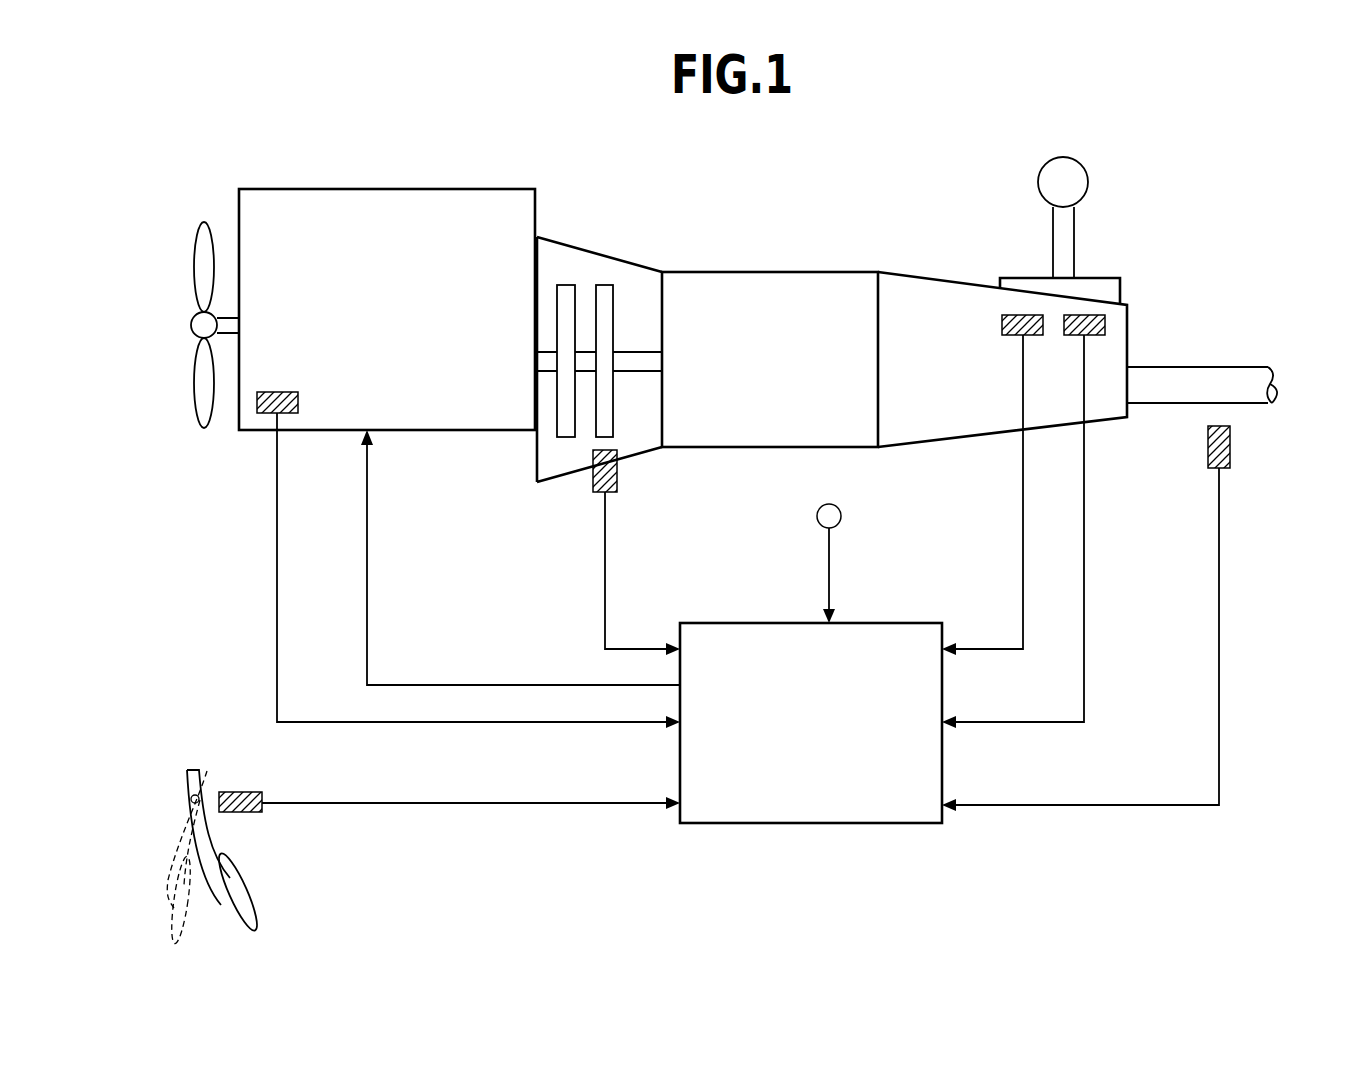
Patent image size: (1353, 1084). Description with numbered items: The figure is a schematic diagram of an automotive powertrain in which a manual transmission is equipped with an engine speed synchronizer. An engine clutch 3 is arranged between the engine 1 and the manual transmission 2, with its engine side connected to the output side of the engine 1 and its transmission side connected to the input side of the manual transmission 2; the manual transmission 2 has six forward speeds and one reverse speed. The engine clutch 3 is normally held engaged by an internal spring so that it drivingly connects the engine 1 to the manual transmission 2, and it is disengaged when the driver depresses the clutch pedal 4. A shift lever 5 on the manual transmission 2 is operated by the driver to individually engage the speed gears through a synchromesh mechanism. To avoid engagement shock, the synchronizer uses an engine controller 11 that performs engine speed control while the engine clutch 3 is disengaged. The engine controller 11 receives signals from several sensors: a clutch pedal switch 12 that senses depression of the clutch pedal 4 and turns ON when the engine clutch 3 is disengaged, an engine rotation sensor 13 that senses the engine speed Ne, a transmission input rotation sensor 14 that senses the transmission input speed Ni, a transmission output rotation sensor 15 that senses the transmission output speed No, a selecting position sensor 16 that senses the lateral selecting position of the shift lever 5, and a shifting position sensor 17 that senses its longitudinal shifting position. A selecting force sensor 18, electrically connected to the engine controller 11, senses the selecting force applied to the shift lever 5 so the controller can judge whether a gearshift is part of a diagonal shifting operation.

The engine 1 is at (341, 189).
The manual transmission 2 is at (760, 272).
The engine clutch 3 is at (588, 264).
The clutch pedal 4 is at (255, 905).
The shift lever 5 is at (1074, 222).
The engine controller 11 is at (905, 623).
The clutch pedal switch 12 is at (228, 792).
The engine rotation sensor 13 is at (298, 400).
The transmission input rotation sensor 14 is at (617, 470).
The transmission output rotation sensor 15 is at (1230, 447).
The selecting position sensor 16 is at (1002, 325).
The shifting position sensor 17 is at (1105, 322).
The selecting force sensor 18 is at (841, 514).